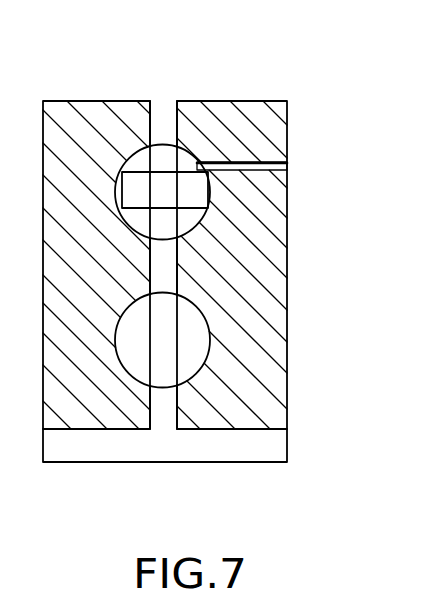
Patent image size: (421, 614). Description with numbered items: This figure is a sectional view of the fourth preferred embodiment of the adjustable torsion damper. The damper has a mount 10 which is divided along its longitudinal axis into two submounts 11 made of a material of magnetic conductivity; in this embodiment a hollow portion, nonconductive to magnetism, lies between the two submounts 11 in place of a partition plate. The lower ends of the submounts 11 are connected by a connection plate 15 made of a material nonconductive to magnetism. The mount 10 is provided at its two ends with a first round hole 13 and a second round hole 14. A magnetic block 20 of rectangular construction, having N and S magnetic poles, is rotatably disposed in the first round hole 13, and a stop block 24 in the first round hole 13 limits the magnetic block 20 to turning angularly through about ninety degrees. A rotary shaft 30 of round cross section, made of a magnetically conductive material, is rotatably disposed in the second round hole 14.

The mount 10 is at (265, 41).
The submounts 11 is at (97, 112).
The first round hole 13 is at (199, 223).
The second round hole 14 is at (207, 363).
The connection plate 15 is at (77, 447).
The magnetic block 20 is at (212, 190).
The stop block 24 is at (263, 162).
The rotary shaft 30 is at (190, 337).